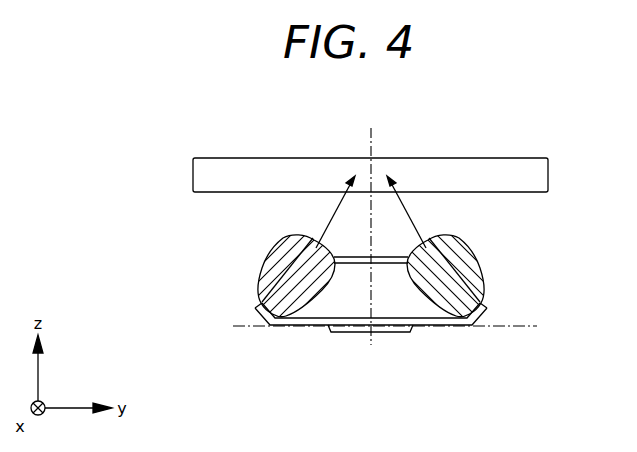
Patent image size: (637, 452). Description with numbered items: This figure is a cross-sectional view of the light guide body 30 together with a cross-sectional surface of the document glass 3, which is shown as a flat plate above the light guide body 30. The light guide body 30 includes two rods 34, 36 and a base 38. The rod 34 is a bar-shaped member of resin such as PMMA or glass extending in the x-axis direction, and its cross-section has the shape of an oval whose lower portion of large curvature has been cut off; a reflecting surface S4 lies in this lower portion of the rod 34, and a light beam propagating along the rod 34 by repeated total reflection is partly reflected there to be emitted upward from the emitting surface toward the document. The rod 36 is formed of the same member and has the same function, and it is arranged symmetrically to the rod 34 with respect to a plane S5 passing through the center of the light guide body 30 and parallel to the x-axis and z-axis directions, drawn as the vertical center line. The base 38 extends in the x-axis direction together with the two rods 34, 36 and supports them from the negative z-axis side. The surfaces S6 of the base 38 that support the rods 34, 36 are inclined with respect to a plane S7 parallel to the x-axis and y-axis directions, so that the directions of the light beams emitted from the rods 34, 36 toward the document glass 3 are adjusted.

The irradiated object 3 is at (502, 167).
The light guide body 30 is at (190, 214).
The rod 34 is at (270, 267).
The rod 36 is at (472, 257).
The base 38 is at (423, 325).
The reflecting surface S4 is at (262, 292).
The plane S5 is at (371, 143).
The surface S6 is at (270, 322).
The plane S7 is at (527, 327).